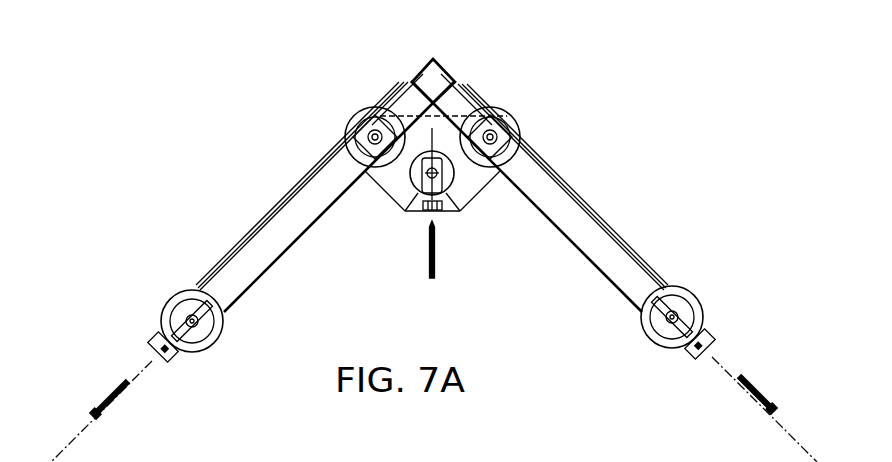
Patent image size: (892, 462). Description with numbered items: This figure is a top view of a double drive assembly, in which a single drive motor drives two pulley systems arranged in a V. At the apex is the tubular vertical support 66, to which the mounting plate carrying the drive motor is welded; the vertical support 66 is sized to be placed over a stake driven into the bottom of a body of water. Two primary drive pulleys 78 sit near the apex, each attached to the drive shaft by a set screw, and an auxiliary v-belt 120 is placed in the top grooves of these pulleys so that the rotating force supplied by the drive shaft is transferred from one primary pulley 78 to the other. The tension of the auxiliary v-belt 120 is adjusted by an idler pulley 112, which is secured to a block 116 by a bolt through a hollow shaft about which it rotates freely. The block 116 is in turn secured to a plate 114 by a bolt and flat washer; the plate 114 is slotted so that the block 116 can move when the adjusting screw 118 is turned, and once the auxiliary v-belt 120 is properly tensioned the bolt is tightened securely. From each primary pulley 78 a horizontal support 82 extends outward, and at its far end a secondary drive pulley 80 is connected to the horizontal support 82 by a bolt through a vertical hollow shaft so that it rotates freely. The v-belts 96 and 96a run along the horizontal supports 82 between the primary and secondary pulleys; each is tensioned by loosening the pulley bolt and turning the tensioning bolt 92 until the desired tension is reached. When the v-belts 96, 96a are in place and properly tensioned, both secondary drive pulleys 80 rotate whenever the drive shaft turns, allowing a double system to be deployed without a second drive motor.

The vertical support 66 is at (433, 60).
The primary drive pulley 78 is at (355, 115).
The secondary drive pulley 80 is at (167, 297).
The horizontal support 82 is at (265, 243).
The tensioning bolt 92 is at (110, 395).
The v-belt 96 is at (220, 260).
The v-belt 96a is at (645, 245).
The idler pulley 112 is at (452, 178).
The plate 114 is at (390, 188).
The block 116 is at (415, 205).
The adjusting screw 118 is at (436, 281).
The auxiliary v-belt 120 is at (448, 152).